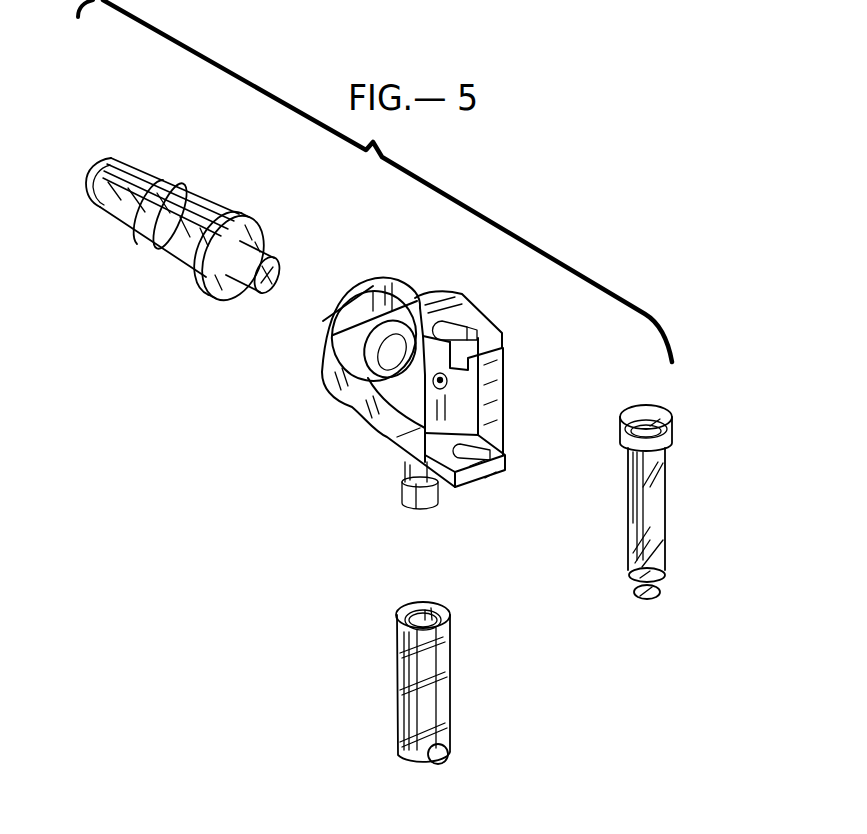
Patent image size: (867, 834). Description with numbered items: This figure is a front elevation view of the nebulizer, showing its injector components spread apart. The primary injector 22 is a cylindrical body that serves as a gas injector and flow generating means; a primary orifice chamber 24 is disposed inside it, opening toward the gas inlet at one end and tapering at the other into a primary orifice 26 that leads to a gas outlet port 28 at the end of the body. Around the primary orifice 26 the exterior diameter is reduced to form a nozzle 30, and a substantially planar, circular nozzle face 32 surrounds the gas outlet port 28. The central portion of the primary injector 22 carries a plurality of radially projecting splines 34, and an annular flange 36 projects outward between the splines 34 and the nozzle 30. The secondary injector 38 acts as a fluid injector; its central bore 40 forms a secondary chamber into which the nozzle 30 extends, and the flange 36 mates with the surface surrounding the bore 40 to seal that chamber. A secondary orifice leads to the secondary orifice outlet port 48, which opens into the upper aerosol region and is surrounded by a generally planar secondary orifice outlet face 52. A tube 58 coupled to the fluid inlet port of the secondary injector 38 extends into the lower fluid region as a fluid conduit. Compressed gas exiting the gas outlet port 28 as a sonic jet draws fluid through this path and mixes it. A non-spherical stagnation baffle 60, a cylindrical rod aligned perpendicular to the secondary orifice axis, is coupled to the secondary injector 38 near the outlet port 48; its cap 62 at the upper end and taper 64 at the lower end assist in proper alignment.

The primary injector 22 is at (199, 241).
The primary orifice chamber 24 is at (126, 170).
The primary orifice 26 is at (222, 293).
The gas outlet port 28 is at (275, 285).
The nozzle 30 is at (262, 248).
The nozzle face 32 is at (274, 267).
The splines 34 is at (165, 258).
The annular flange 36 is at (243, 208).
The secondary injector 38 is at (393, 398).
The central bore 40 is at (360, 340).
The secondary orifice outlet port 48 is at (455, 392).
The secondary orifice outlet face 52 is at (384, 440).
The tube 58 is at (398, 696).
The stagnation baffle 60 is at (714, 517).
The cap 62 is at (668, 412).
The taper 64 is at (657, 599).